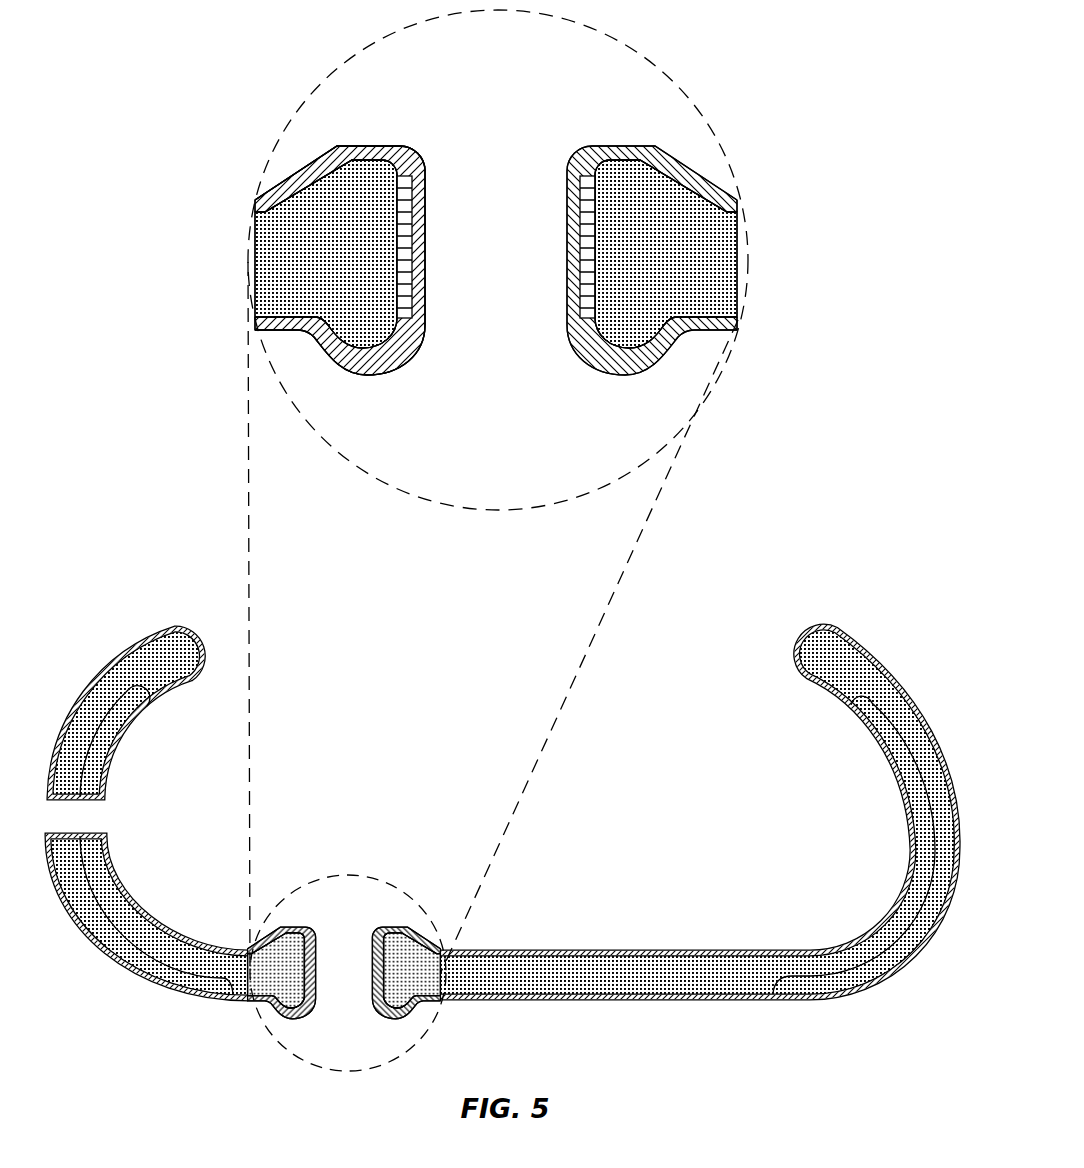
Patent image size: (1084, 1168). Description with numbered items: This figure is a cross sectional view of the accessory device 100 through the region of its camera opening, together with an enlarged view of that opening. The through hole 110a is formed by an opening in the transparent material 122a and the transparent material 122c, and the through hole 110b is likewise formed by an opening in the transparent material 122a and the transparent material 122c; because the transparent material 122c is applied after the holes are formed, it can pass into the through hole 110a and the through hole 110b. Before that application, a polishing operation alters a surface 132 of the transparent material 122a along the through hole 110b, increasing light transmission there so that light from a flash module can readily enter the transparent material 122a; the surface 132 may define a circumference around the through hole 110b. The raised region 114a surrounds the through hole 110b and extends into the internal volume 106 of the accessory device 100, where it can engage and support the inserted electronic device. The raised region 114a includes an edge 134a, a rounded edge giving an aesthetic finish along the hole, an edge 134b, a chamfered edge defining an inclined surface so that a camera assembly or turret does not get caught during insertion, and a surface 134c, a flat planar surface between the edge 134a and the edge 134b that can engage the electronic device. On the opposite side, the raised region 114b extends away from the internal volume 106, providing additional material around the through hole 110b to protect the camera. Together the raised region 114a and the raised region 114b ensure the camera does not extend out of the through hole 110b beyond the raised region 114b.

The accessory device 100 is at (182, 764).
The internal volume 106 is at (697, 650).
The through hole 110a is at (125, 804).
The through hole 110b is at (493, 249).
The raised region 114a is at (338, 105).
The raised region 114b is at (385, 405).
The transparent material 122a is at (316, 267).
The transparent material 122c is at (298, 333).
The surface 132 is at (413, 302).
The edge 134a is at (426, 146).
The edge 134b is at (293, 176).
The surface 134c is at (376, 144).